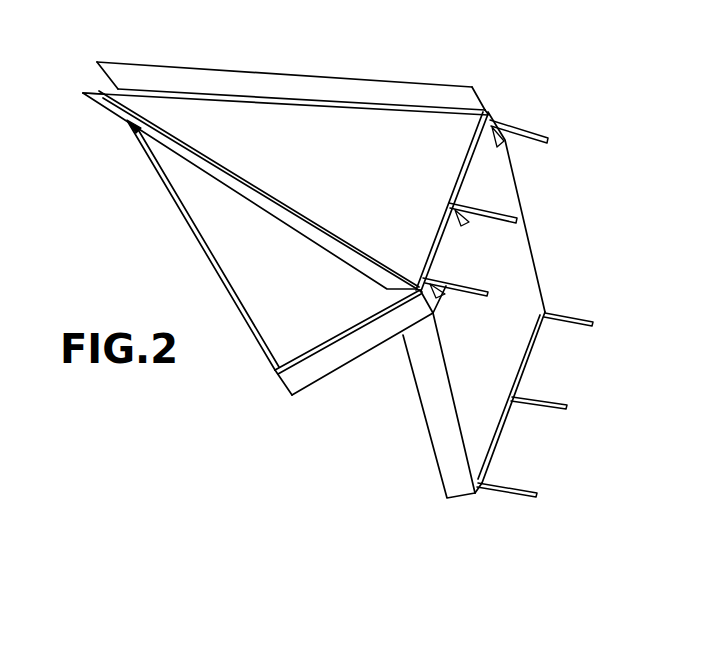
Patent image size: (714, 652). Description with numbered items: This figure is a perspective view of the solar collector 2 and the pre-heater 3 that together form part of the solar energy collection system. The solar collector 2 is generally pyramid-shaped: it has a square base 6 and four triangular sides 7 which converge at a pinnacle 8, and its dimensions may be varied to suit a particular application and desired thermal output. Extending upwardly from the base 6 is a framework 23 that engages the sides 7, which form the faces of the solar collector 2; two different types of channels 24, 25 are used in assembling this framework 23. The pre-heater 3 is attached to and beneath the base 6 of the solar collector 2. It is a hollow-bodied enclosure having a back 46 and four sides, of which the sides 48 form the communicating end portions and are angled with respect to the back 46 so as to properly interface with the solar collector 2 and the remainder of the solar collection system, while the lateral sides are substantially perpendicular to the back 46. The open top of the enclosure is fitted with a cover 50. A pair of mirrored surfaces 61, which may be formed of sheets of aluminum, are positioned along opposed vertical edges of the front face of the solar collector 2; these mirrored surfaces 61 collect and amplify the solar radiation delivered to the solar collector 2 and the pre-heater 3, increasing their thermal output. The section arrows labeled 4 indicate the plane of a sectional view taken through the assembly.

The solar collector 2 is at (164, 222).
The pre-heater 3 is at (536, 255).
The section line 4 is at (62, 43).
The base 6 is at (318, 366).
The triangular sides 7 is at (371, 186).
The pinnacle 8 is at (101, 87).
The framework 23 is at (490, 110).
The channel 24 is at (447, 202).
The channel 25 is at (348, 108).
The back 46 is at (435, 452).
The sides 48 is at (423, 370).
The cover 50 is at (511, 346).
The mirrored surfaces 61 is at (281, 84).